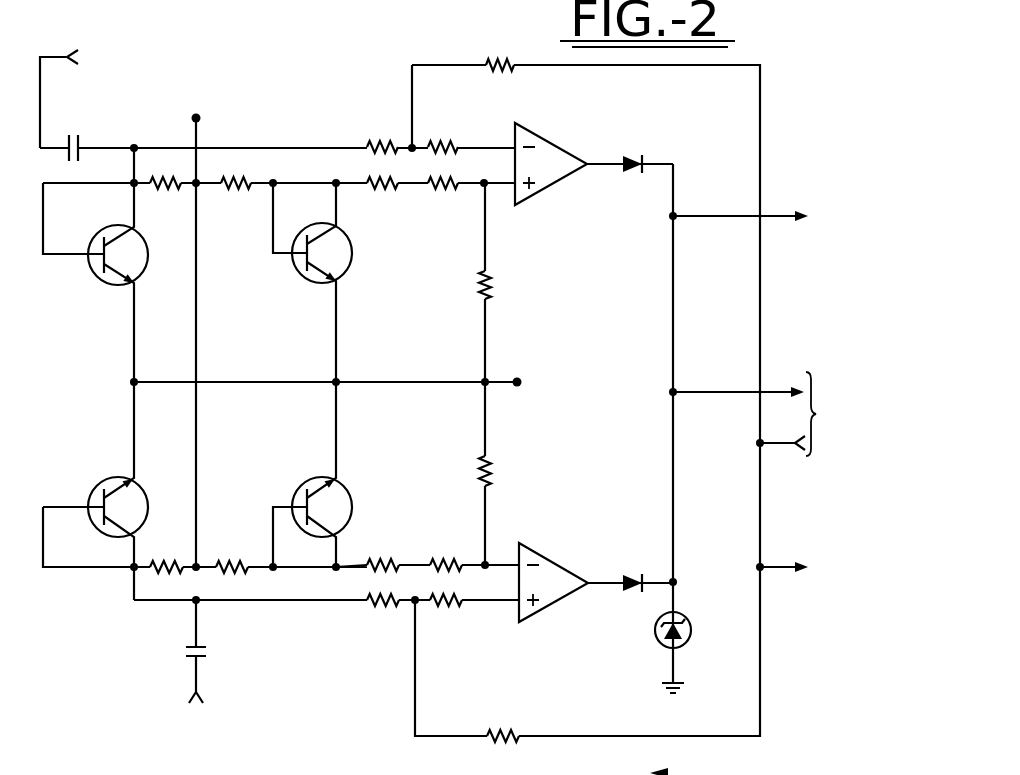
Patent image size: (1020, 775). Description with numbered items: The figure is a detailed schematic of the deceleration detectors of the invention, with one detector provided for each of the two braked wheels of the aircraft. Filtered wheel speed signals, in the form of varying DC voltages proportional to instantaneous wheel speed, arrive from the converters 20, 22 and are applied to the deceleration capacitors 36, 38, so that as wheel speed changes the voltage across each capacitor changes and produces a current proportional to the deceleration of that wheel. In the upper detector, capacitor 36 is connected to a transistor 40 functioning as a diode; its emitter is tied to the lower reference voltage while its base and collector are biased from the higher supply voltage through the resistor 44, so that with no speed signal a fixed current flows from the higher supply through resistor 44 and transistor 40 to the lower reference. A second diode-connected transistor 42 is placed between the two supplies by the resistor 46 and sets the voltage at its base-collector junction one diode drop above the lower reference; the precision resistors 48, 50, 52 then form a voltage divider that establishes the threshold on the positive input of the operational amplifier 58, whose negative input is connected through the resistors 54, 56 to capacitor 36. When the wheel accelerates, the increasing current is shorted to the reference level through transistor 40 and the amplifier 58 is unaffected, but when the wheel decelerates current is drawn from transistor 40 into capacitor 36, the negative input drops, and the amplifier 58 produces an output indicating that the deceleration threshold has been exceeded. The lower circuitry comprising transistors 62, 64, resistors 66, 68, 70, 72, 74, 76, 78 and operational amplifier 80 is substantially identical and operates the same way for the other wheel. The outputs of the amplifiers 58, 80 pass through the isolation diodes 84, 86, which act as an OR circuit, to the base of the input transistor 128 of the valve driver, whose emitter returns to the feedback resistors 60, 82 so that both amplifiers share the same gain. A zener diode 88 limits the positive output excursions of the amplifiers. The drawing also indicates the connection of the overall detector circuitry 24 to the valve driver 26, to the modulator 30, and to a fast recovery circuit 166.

The converter 20 is at (172, 98).
The converter 22 is at (218, 721).
The control circuit 24 is at (785, 50).
The valve driver 26 is at (533, 771).
The modulator 30 is at (838, 574).
The deceleration capacitor 36 is at (87, 136).
The deceleration capacitor 38 is at (211, 643).
The transistor 40 is at (155, 256).
The second transistor 42 is at (350, 265).
The resistor 44 is at (165, 197).
The resistor 46 is at (236, 197).
The resistor 48 is at (382, 197).
The resistor 50 is at (443, 197).
The resistor 52 is at (500, 285).
The resistor 54 is at (382, 131).
The resistor 56 is at (443, 131).
The operational amplifier 58 is at (538, 134).
The feedback resistor 60 is at (500, 52).
The transistor 62 is at (110, 491).
The transistor 64 is at (327, 474).
The resistor 66 is at (166, 553).
The resistor 68 is at (232, 553).
The resistor 70 is at (383, 550).
The resistor 72 is at (446, 550).
The resistor 74 is at (502, 471).
The resistor 76 is at (383, 614).
The resistor 78 is at (446, 614).
The operational amplifier 80 is at (540, 620).
The feedback resistor 82 is at (503, 721).
The isolation diode 84 is at (630, 151).
The isolation diode 86 is at (630, 570).
The zener diode 88 is at (692, 640).
The input transistor 128 is at (796, 425).
The fast recovery circuit 166 is at (790, 231).